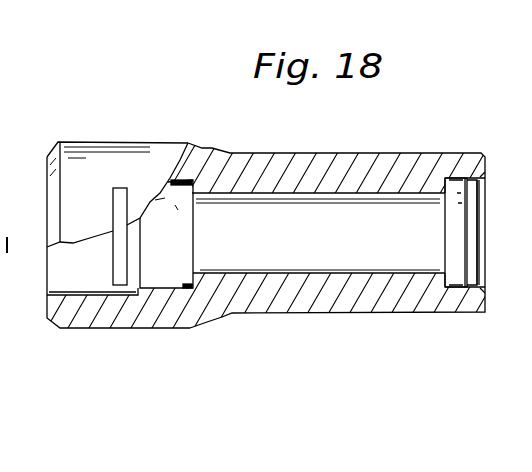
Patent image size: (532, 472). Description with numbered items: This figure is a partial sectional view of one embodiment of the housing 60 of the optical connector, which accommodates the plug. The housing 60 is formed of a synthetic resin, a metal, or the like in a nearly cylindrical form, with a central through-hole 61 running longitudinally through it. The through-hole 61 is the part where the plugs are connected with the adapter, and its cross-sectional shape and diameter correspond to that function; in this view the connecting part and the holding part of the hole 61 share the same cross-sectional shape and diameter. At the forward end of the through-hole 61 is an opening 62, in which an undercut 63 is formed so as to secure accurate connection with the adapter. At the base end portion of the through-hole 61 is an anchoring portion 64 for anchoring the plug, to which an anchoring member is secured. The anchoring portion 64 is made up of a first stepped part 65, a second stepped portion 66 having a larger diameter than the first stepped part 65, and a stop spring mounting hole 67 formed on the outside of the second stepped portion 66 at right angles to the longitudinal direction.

The housing 60 is at (420, 148).
The through-hole 61 is at (360, 207).
The opening 62 is at (488, 228).
The undercut 63 is at (457, 178).
The anchoring portion 64 is at (182, 180).
The first stepped part 65 is at (187, 290).
The second stepped portion 66 is at (138, 290).
The stop spring mounting hole 67 is at (113, 262).